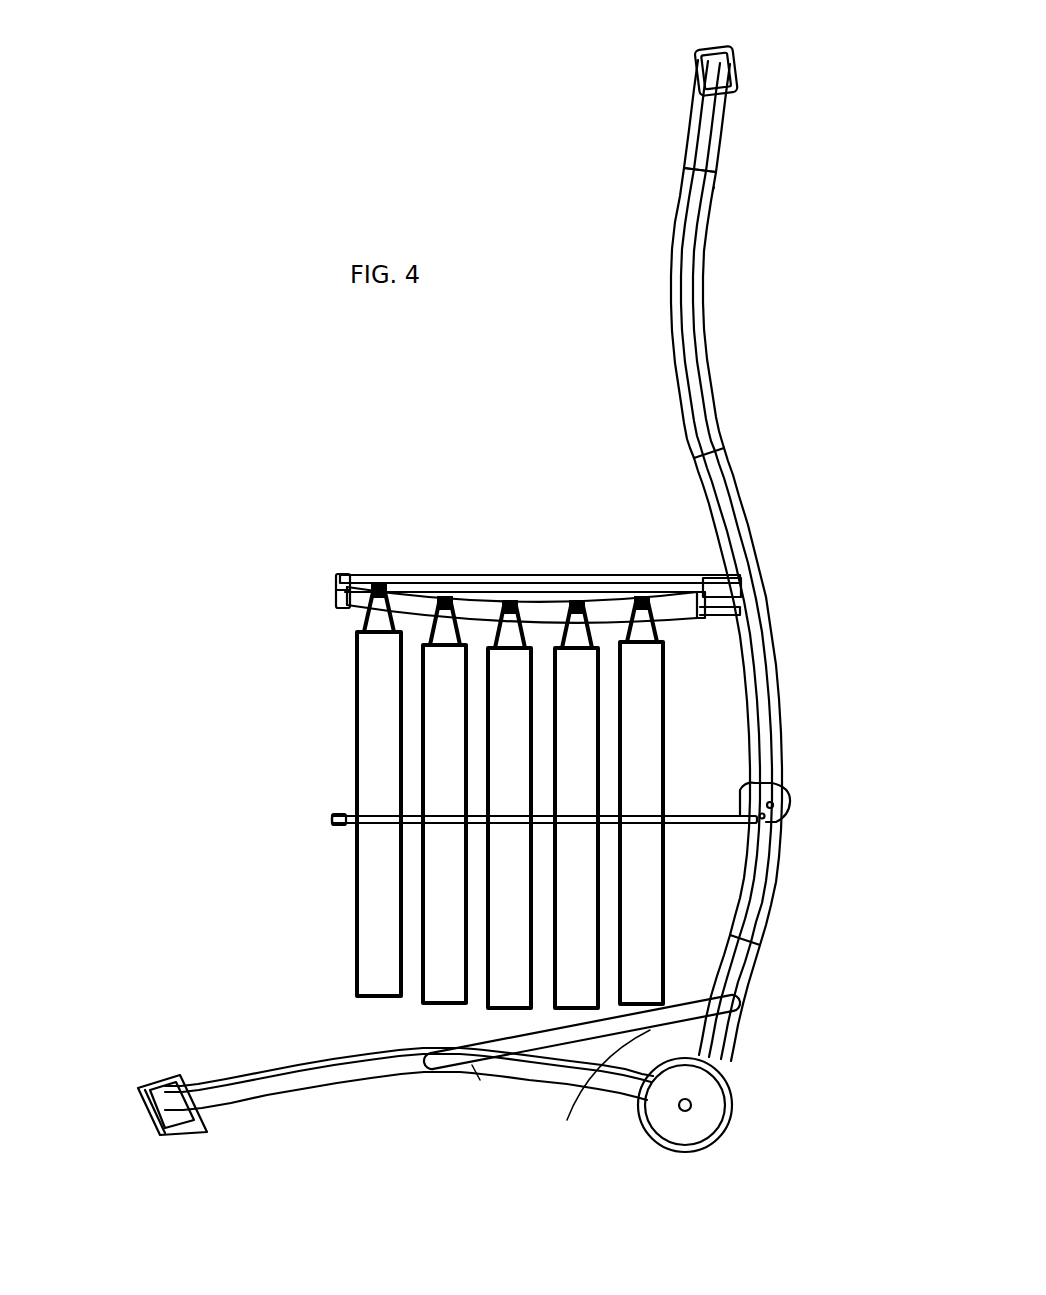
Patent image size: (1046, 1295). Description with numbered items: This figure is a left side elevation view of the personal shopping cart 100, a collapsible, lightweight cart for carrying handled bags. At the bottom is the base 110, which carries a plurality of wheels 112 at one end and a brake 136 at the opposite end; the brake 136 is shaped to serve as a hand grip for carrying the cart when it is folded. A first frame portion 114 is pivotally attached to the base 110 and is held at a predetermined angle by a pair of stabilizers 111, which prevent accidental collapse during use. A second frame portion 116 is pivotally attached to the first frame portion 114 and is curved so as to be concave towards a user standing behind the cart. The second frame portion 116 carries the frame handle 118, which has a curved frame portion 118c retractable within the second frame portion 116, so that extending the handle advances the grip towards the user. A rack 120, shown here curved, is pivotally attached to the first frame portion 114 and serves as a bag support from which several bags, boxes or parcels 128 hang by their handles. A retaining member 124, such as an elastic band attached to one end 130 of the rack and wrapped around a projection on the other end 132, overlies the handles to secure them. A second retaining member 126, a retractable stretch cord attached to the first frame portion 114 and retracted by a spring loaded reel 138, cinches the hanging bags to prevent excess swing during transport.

The personal shopping cart 100 is at (331, 457).
The base 110 is at (281, 1060).
The stabilizers 111 is at (645, 1032).
The wheels 112 is at (713, 1145).
The first frame portion 114 is at (773, 700).
The second frame portion 116 is at (708, 360).
The frame handle 118 is at (705, 52).
The curved frame portion 118c is at (722, 112).
The rack 120 is at (345, 605).
The retaining member 124 is at (515, 578).
The second retaining member 126 is at (332, 817).
The bag, box or parcel 128 is at (357, 945).
The end of the rack 130 is at (345, 578).
The end of the rack 132 is at (737, 582).
The brake 136 is at (170, 1078).
The spring loaded reel 138 is at (791, 786).